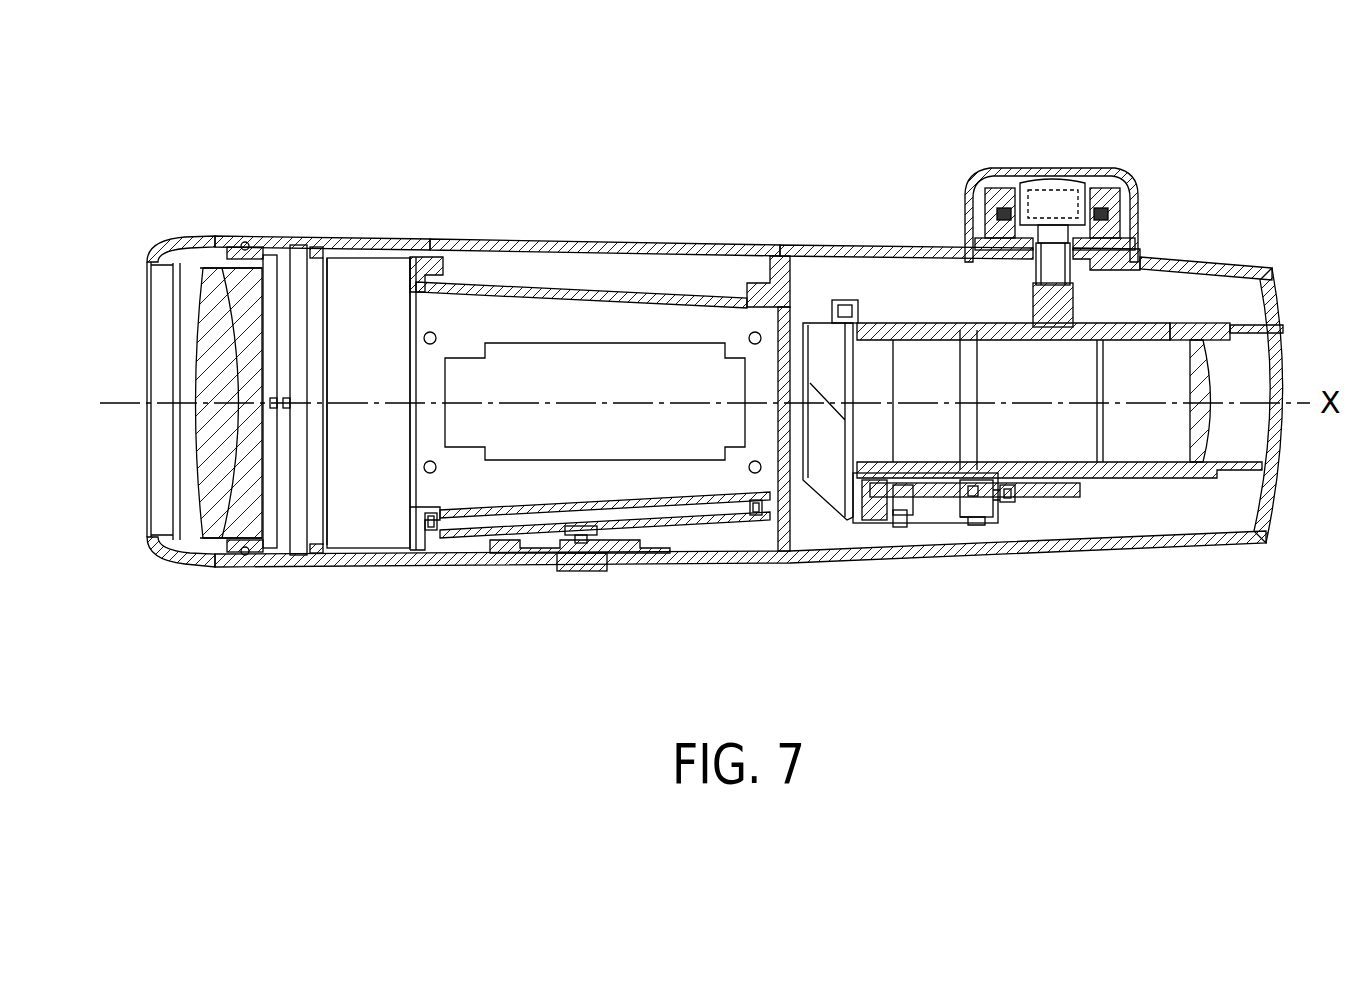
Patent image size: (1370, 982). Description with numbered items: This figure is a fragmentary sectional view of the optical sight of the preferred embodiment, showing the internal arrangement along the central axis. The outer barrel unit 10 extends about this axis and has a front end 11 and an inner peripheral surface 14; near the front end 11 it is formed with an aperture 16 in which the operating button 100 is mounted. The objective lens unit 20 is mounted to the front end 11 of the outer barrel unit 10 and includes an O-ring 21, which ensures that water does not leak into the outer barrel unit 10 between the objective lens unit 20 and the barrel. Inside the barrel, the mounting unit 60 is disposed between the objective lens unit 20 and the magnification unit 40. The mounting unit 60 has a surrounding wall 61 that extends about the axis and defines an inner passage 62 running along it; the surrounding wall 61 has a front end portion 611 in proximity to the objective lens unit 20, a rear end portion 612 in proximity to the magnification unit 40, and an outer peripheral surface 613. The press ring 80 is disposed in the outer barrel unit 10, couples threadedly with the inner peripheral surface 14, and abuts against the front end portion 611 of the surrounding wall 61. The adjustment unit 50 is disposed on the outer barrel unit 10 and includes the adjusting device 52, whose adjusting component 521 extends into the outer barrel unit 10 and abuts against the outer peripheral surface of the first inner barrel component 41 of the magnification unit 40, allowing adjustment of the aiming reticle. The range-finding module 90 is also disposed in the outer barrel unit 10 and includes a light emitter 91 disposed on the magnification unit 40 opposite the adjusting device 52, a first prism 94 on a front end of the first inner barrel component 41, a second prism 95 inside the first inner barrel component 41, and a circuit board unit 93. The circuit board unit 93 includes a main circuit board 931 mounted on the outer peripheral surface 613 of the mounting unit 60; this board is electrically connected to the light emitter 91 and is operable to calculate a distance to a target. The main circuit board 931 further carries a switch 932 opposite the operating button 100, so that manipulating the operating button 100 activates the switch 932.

The outer barrel unit 10 is at (298, 230).
The front end 11 is at (262, 240).
The inner peripheral surface 14 is at (633, 246).
The aperture 16 is at (490, 567).
The objective lens unit 20 is at (132, 298).
The O-ring 21 is at (243, 243).
The magnification unit 40 is at (1070, 319).
The first inner barrel component 41 is at (1183, 325).
The adjustment unit 50 is at (1041, 181).
The adjusting device 52 is at (1022, 168).
The adjusting component 521 is at (1052, 268).
The mounting unit 60 is at (570, 333).
The surrounding wall 61 is at (577, 290).
The front end portion 611 is at (372, 248).
The rear end portion 612 is at (778, 262).
The outer peripheral surface 613 is at (470, 276).
The inner passage 62 is at (677, 318).
The press ring 80 is at (293, 563).
The range-finding module 90 is at (970, 573).
The light emitter 91 is at (975, 506).
The circuit board unit 93 is at (686, 524).
The main circuit board 931 is at (728, 523).
The switch 932 is at (581, 535).
The first prism 94 is at (830, 470).
The second prism 95 is at (1075, 455).
The operating button 100 is at (537, 567).